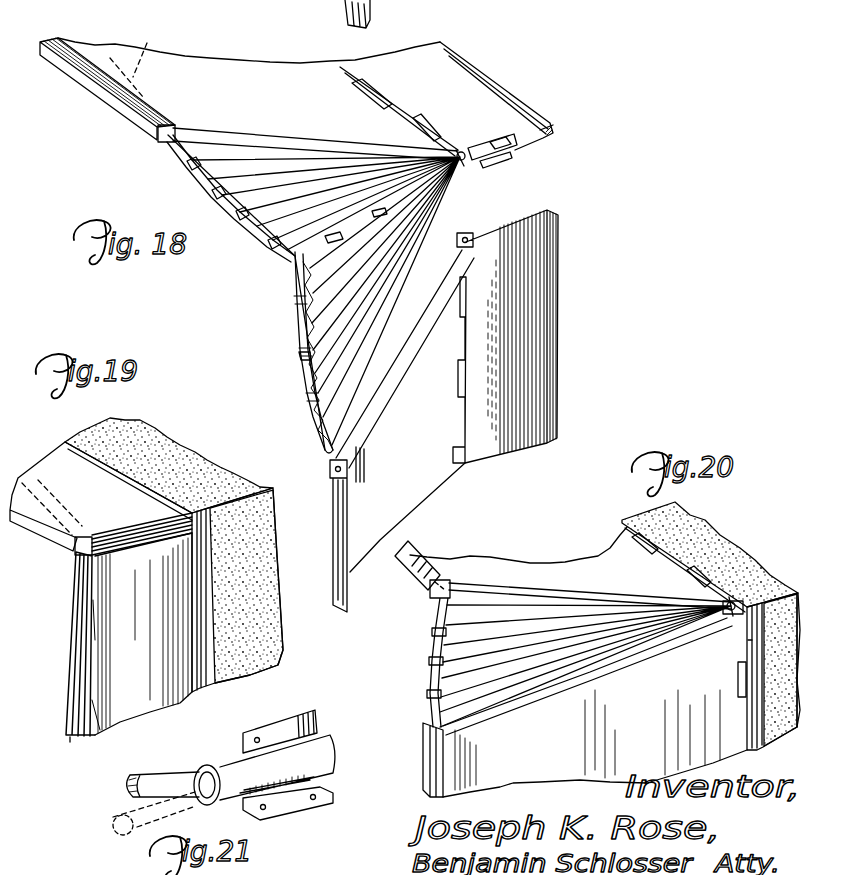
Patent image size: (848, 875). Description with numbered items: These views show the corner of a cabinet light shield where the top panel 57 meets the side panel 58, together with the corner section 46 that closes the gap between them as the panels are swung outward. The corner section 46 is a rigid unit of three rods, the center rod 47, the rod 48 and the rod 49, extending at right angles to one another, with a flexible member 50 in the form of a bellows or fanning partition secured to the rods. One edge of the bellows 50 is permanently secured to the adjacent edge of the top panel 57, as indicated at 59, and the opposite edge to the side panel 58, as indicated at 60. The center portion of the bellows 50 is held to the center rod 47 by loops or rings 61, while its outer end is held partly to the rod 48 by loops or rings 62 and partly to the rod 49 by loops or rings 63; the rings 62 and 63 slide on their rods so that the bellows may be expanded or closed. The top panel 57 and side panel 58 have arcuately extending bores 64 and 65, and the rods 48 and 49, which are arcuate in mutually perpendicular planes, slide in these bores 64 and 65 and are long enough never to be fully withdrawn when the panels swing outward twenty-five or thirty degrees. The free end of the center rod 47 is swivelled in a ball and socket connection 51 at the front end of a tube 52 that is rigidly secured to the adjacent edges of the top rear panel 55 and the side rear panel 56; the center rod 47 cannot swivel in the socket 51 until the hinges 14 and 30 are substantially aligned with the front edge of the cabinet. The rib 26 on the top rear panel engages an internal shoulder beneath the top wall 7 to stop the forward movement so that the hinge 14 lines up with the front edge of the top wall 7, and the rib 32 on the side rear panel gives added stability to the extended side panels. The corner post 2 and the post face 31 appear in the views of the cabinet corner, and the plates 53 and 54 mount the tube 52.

In FIG. 19, the corner post 2 is at (262, 487).
In FIG. 20, the corner post 2 is at (780, 588).
In FIG. 19, the top wall 7 is at (207, 457).
In FIG. 18, the hinge 14 is at (375, 101).
In FIG. 20, the hinge 14 is at (643, 546).
In FIG. 18, the rib 26 is at (553, 118).
In FIG. 18, the hinge 30 is at (457, 465).
In FIG. 20, the hinge 30 is at (738, 683).
In FIG. 19, the post front face 31 is at (262, 580).
In FIG. 18, the rib 32 is at (558, 339).
In FIG. 20, the rib 32 is at (778, 737).
In FIG. 18, the corner section 46 is at (292, 284).
In FIG. 19, the corner section 46 is at (151, 519).
In FIG. 20, the corner section 46 is at (550, 668).
In FIG. 18, the center rod 47 is at (400, 197).
In FIG. 20, the center rod 47 is at (740, 588).
In FIG. 21, the center rod 47 is at (160, 780).
In FIG. 18, the rod 48 is at (238, 220).
In FIG. 19, the rod 48 is at (63, 502).
In FIG. 20, the rod 48 is at (412, 553).
In FIG. 18, the rod 49 is at (294, 331).
In FIG. 19, the rod 49 is at (97, 603).
In FIG. 20, the rod 49 is at (433, 667).
In FIG. 18, the flexible member 50 is at (280, 167).
In FIG. 19, the flexible member 50 is at (117, 532).
In FIG. 20, the flexible member 50 is at (620, 642).
In FIG. 18, the ball and socket connection 51 is at (465, 150).
In FIG. 20, the ball and socket connection 51 is at (741, 597).
In FIG. 21, the ball and socket connection 51 is at (227, 770).
In FIG. 18, the tube 52 is at (518, 150).
In FIG. 21, the tube 52 is at (327, 750).
In FIG. 18, the upper mounting plate 53 is at (496, 146).
In FIG. 21, the upper mounting plate 53 is at (293, 720).
In FIG. 18, the lower mounting plate 54 is at (508, 166).
In FIG. 21, the lower mounting plate 54 is at (287, 811).
In FIG. 18, the top rear panel 55 is at (470, 95).
In FIG. 20, the top rear panel 55 is at (693, 533).
In FIG. 18, the side rear panel 56 is at (530, 256).
In FIG. 18, the top panel 57 is at (201, 52).
In FIG. 19, the top panel 57 is at (37, 470).
In FIG. 20, the top panel 57 is at (565, 571).
In FIG. 18, the side panel 58 is at (344, 3).
In FIG. 19, the side panel 58 is at (70, 742).
In FIG. 20, the side panel 58 is at (727, 648).
In FIG. 18, the securement of bellows to top panel 59 is at (206, 134).
In FIG. 20, the securement of bellows to top panel 59 is at (590, 596).
In FIG. 18, the securement of bellows to side panel 60 is at (384, 393).
In FIG. 20, the securement of bellows to side panel 60 is at (587, 676).
In FIG. 18, the loops or rings 61 is at (378, 218).
In FIG. 18, the loops or rings 62 is at (196, 168).
In FIG. 19, the loops or rings 62 is at (83, 546).
In FIG. 18, the loops or rings 63 is at (299, 354).
In FIG. 18, the arcuate bore 64 is at (135, 52).
In FIG. 19, the arcuate bore 64 is at (51, 498).
In FIG. 20, the arcuate bore 64 is at (433, 599).
In FIG. 18, the arcuate bore 65 is at (352, 474).
In FIG. 19, the arcuate bore 65 is at (99, 624).
In FIG. 20, the arcuate bore 65 is at (423, 724).